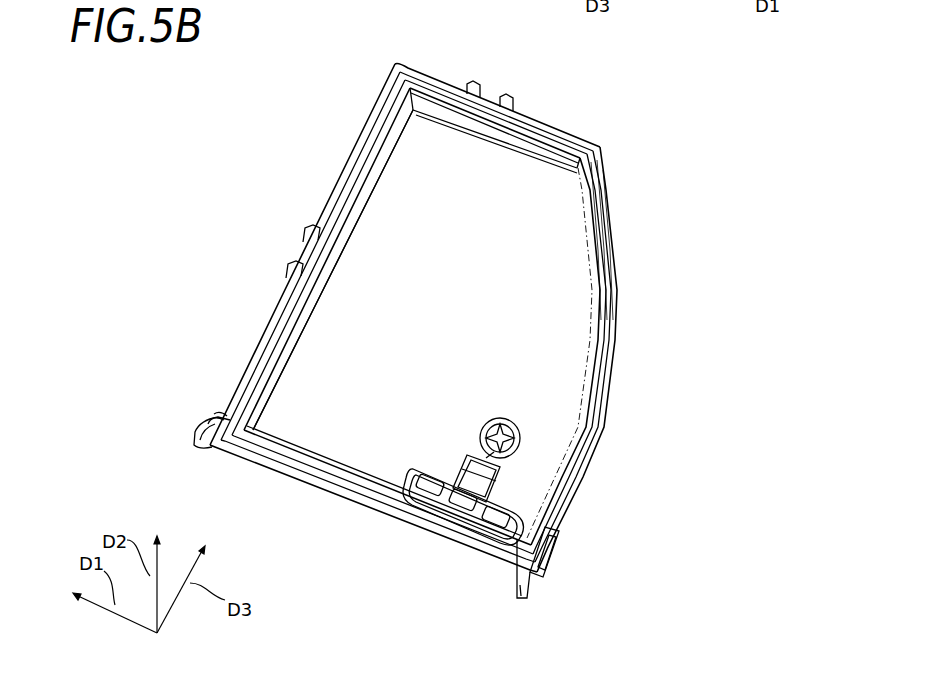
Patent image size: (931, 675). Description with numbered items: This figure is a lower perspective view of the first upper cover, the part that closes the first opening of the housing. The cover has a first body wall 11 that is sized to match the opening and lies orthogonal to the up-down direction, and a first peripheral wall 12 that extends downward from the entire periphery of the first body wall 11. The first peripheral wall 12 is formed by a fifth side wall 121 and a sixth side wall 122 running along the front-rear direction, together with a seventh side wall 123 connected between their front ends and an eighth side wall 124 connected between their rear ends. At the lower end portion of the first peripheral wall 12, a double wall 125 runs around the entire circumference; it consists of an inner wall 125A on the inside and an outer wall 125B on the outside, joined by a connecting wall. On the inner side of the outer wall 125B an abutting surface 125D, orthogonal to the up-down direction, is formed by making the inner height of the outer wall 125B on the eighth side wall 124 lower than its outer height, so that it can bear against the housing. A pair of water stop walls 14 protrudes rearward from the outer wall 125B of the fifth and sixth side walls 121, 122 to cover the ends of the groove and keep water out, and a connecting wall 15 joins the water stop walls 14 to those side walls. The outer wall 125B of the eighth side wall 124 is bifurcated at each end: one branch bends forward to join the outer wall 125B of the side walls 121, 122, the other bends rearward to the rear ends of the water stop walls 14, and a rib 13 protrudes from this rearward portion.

The first body wall 11 is at (500, 185).
The first peripheral wall 12 is at (495, 313).
The rib 13 is at (332, 494).
The water stop walls 14 is at (203, 432).
The connecting wall 15 is at (222, 420).
The fifth side wall 121 is at (617, 354).
The sixth side wall 122 is at (347, 156).
The seventh side wall 123 is at (455, 78).
The eighth side wall 124 is at (373, 523).
The double wall 125 is at (675, 240).
The inner wall 125A is at (609, 275).
The outer wall 125B is at (612, 247).
The abutting surface 125D is at (606, 196).